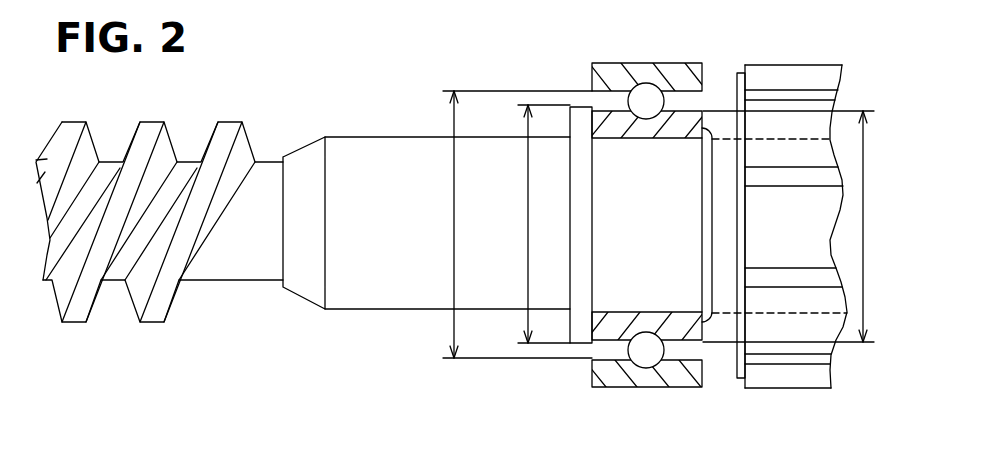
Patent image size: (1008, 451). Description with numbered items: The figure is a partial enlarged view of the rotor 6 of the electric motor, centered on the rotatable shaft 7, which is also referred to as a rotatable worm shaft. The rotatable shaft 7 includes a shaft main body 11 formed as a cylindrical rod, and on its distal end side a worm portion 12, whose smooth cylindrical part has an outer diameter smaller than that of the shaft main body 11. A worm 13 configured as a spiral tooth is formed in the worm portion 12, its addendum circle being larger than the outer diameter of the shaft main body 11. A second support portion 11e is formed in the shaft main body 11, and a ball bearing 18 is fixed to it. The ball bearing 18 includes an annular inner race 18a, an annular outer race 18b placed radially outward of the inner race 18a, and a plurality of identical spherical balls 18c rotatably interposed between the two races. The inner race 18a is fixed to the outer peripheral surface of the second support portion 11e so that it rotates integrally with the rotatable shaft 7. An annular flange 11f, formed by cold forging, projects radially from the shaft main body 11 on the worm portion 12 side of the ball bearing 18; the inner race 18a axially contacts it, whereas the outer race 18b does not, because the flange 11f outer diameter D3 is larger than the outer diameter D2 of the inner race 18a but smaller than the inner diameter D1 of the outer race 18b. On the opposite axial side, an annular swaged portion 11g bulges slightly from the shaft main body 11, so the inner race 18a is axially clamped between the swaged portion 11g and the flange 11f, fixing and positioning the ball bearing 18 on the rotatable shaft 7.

The rotor 6 is at (303, 220).
The rotatable shaft 7 is at (426, 219).
The shaft main body 11 is at (390, 311).
The worm portion 12 is at (233, 282).
The worm 13 is at (151, 120).
The second support portion 11e is at (690, 250).
The flange 11f is at (583, 222).
The swaged portion 11g is at (714, 203).
The ball bearing 18 is at (644, 223).
The inner race 18a is at (642, 138).
The outer race 18b is at (653, 383).
The balls 18c is at (647, 90).
The inner diameter of the outer race D1 is at (453, 223).
The outer diameter of the inner race D2 is at (865, 227).
The outer diameter of the flange D3 is at (527, 223).